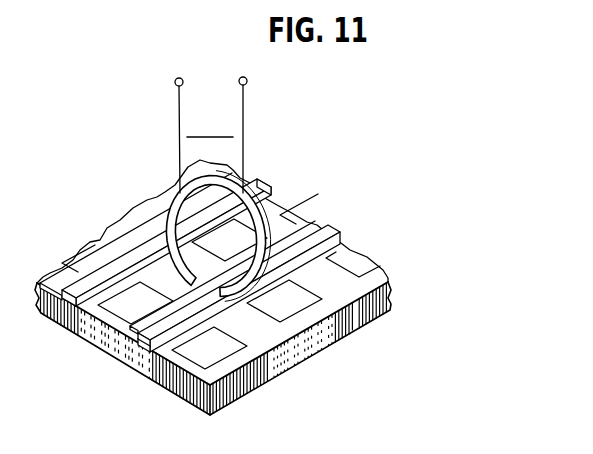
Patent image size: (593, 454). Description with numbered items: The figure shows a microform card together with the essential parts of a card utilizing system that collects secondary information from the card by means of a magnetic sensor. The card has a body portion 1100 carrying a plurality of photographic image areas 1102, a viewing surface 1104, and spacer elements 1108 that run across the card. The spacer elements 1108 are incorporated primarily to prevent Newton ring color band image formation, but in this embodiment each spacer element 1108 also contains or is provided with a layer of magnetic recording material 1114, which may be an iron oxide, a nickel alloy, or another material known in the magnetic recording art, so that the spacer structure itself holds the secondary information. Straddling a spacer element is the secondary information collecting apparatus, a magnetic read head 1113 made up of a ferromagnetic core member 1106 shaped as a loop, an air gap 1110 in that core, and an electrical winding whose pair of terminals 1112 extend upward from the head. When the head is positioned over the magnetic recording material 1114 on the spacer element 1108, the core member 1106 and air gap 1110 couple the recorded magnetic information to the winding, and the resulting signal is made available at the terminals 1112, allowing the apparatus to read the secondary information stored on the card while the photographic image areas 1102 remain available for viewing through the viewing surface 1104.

The body portion 1100 is at (308, 340).
The photographic image areas 1102 is at (208, 347).
The viewing surface 1104 is at (108, 247).
The ferromagnetic core member 1106 is at (250, 222).
The spacer elements 1108 is at (147, 345).
The air gap 1110 is at (163, 232).
The terminals 1112 is at (198, 101).
The magnetic read head 1113 is at (210, 122).
The magnetic recording material 1114 is at (152, 333).